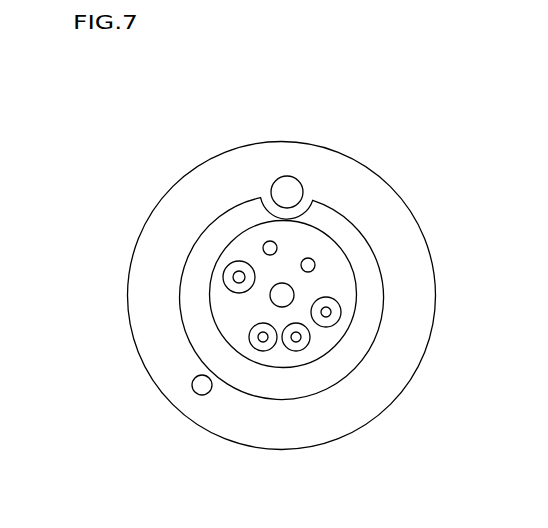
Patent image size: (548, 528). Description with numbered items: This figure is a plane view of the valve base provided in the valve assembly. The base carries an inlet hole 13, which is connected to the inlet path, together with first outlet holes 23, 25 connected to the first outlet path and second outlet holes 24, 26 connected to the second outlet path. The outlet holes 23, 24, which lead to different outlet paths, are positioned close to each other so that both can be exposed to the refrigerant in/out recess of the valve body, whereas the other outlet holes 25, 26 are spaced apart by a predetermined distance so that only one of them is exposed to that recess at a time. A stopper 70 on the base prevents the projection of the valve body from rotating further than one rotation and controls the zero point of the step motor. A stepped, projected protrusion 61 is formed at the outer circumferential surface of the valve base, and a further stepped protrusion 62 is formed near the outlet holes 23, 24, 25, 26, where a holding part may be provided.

The inlet hole 13 is at (299, 182).
The protrusion 61 is at (207, 243).
The protrusion 62 is at (224, 278).
The second outlet hole 26 is at (237, 278).
The first outlet hole 23 is at (263, 340).
The second outlet hole 24 is at (296, 340).
The first outlet hole 25 is at (328, 315).
The stopper 70 is at (201, 385).